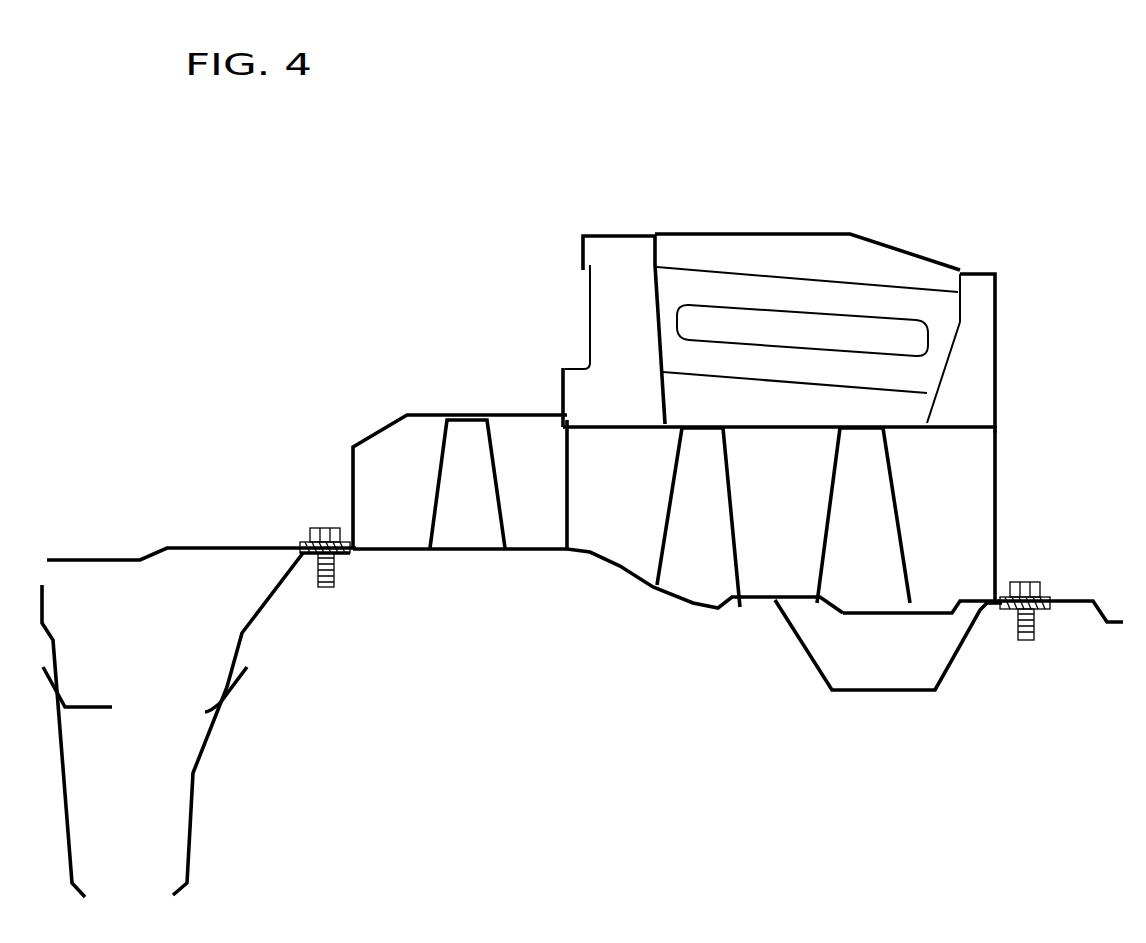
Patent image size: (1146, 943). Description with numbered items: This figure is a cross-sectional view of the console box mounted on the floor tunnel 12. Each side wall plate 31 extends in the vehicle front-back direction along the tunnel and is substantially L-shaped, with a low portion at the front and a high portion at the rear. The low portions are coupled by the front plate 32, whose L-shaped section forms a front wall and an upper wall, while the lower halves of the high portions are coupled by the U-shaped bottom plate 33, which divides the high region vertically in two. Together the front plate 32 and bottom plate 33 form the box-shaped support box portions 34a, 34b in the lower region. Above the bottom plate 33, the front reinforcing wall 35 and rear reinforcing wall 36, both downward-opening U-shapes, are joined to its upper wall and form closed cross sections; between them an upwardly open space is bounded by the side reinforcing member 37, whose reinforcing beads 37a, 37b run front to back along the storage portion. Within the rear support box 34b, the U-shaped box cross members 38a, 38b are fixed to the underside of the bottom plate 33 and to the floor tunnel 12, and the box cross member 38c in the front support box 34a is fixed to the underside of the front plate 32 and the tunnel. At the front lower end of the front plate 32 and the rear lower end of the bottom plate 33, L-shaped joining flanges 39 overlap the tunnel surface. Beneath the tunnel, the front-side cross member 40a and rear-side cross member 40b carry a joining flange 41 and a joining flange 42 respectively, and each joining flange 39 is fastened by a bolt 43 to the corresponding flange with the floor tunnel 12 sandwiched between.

The floor tunnel 12 is at (198, 547).
The side wall plate 31 is at (613, 513).
The front plate 32 is at (383, 432).
The bottom plate 33 is at (993, 480).
The support box portion 34a is at (395, 527).
The support box portion 34b is at (968, 520).
The front reinforcing wall 35 is at (585, 297).
The rear reinforcing wall 36 is at (1000, 302).
The side reinforcing member 37 is at (867, 283).
The reinforcing bead 37a is at (782, 293).
The reinforcing bead 37b is at (823, 363).
The box cross member 38a is at (665, 531).
The box cross member 38b is at (815, 565).
The box cross member 38c is at (503, 507).
The joining flange 39 is at (307, 545).
The front-side cross member 40a is at (242, 640).
The rear-side cross member 40b is at (890, 692).
The joining flange 41 is at (310, 555).
The joining flange 42 is at (993, 610).
The bolt 43 is at (328, 525).